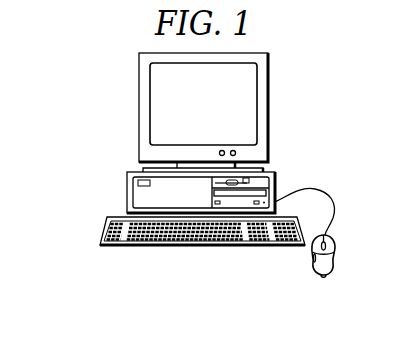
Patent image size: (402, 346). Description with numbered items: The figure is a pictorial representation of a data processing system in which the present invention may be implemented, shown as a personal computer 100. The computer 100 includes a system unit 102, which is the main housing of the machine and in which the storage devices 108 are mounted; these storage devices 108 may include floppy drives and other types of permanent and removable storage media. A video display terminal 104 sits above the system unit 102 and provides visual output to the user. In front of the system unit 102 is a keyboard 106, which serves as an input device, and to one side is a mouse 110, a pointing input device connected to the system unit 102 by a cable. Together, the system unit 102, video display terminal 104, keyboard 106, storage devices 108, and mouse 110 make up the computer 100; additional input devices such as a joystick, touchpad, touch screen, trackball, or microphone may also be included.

The computer 100 is at (83, 95).
The system unit 102 is at (127, 190).
The video display terminal 104 is at (268, 108).
The keyboard 106 is at (122, 250).
The storage devices 108 is at (276, 187).
The mouse 110 is at (327, 278).